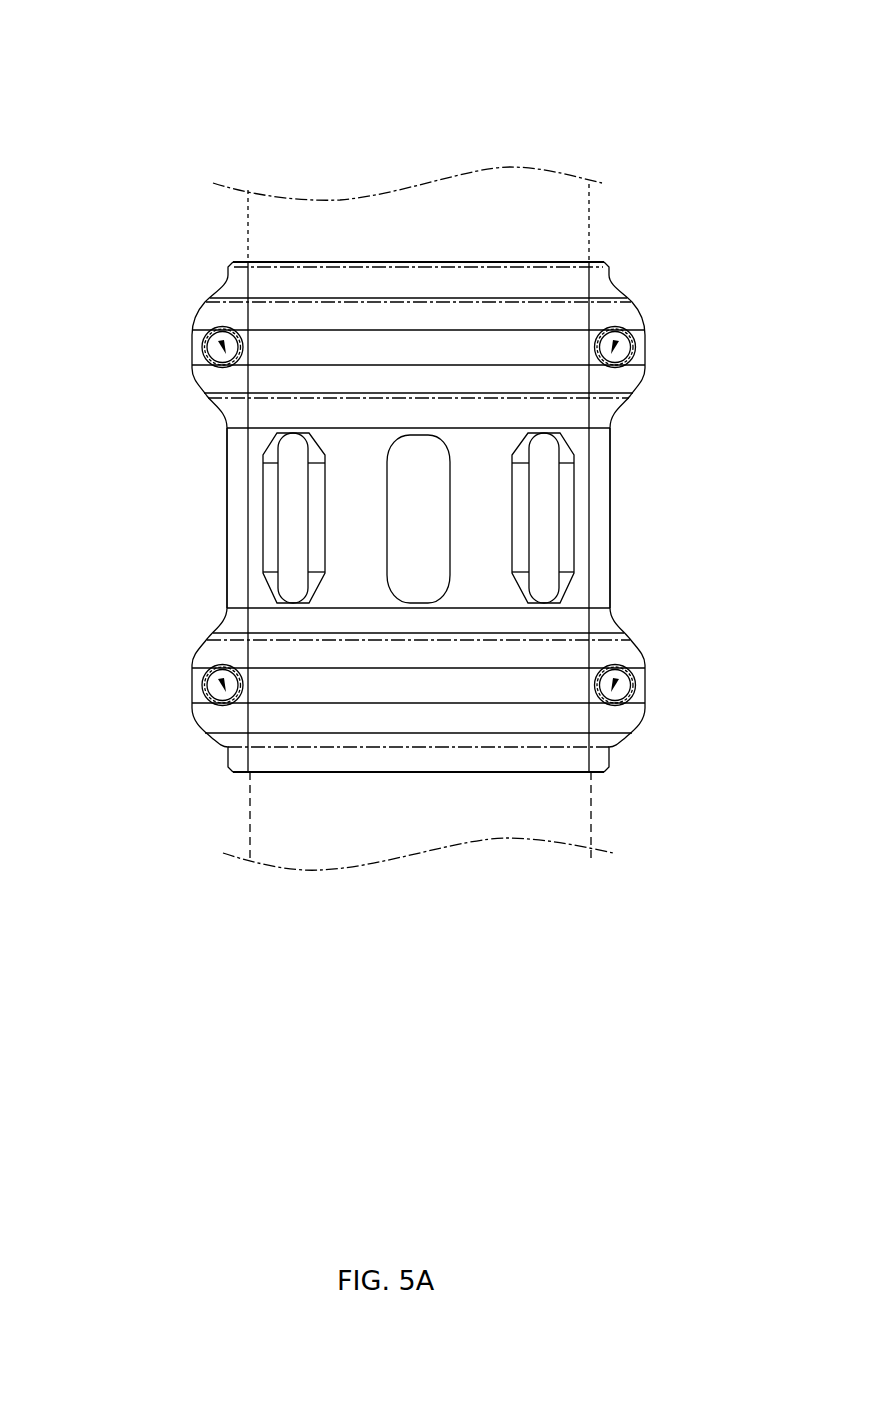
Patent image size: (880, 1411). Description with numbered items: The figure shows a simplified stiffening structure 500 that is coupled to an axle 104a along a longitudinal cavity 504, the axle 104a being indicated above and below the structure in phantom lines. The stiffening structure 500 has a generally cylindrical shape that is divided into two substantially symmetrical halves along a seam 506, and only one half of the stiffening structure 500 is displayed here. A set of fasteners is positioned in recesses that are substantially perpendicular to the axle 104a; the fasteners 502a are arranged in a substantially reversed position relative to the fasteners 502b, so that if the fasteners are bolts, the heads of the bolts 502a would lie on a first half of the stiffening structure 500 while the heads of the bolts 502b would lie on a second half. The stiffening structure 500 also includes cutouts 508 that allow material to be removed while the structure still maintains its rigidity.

The stiffening structure 500 is at (231, 128).
The axle 104a is at (268, 238).
The fasteners 502a is at (208, 328).
The fasteners 502b is at (642, 335).
The longitudinal cavity 504 is at (424, 790).
The seam 506 is at (218, 525).
The cutouts 508 is at (285, 470).